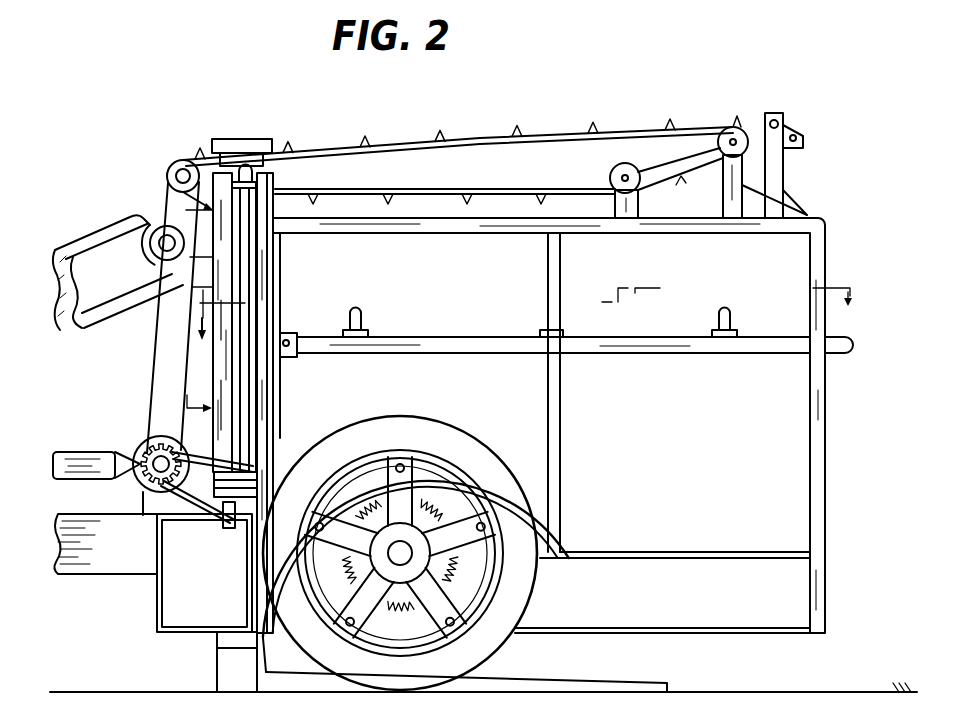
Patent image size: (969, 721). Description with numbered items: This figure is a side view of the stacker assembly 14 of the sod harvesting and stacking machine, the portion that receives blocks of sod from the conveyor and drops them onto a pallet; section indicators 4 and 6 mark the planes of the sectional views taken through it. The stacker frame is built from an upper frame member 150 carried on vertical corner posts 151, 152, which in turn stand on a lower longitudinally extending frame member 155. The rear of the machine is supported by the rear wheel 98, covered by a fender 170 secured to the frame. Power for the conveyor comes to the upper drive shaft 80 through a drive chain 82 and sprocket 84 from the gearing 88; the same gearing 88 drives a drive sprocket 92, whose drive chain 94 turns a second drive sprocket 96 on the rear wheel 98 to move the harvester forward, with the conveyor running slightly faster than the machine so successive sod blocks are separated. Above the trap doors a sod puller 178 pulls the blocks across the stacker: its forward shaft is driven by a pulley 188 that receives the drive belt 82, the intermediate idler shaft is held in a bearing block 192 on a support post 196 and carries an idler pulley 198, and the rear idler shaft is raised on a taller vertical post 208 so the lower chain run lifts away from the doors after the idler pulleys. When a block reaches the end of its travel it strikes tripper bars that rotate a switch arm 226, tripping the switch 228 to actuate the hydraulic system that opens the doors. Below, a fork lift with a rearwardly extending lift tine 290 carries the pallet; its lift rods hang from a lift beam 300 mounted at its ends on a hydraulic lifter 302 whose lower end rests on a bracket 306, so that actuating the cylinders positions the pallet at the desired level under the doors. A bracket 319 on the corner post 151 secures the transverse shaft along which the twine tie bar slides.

The feed chute 4 is at (57, 229).
The section line 6- 6 is at (146, 190).
The stacker assembly 14 is at (852, 219).
The upper drive shaft 80 is at (160, 252).
The drive chain 82 is at (160, 360).
The sprocket 84 is at (154, 244).
The gearing 88 is at (141, 446).
The drive sprocket 92 is at (139, 481).
The drive chain 94 is at (194, 502).
The second drive sprocket 96 is at (448, 556).
The rear wheel 98 is at (426, 673).
The upper frame member 150 is at (437, 226).
The vertical corner post 151 is at (277, 293).
The vertical corner post 152 is at (830, 397).
The lower longitudinally extending frame member 155 is at (678, 634).
The fender 170 is at (565, 487).
The sod puller 178 is at (556, 152).
The pulley 188 is at (166, 177).
The bearing block 192 is at (612, 178).
The support post 196 is at (618, 206).
The idler pulley 198 is at (638, 170).
The vertical post 208 is at (726, 190).
The switch arm 226 is at (796, 150).
The switch 228 is at (803, 131).
The lift tine 290 is at (541, 682).
The lift beam 300 is at (246, 140).
The hydraulic lifter 302 is at (240, 390).
The bracket 306 is at (223, 530).
The bracket 319 is at (285, 333).